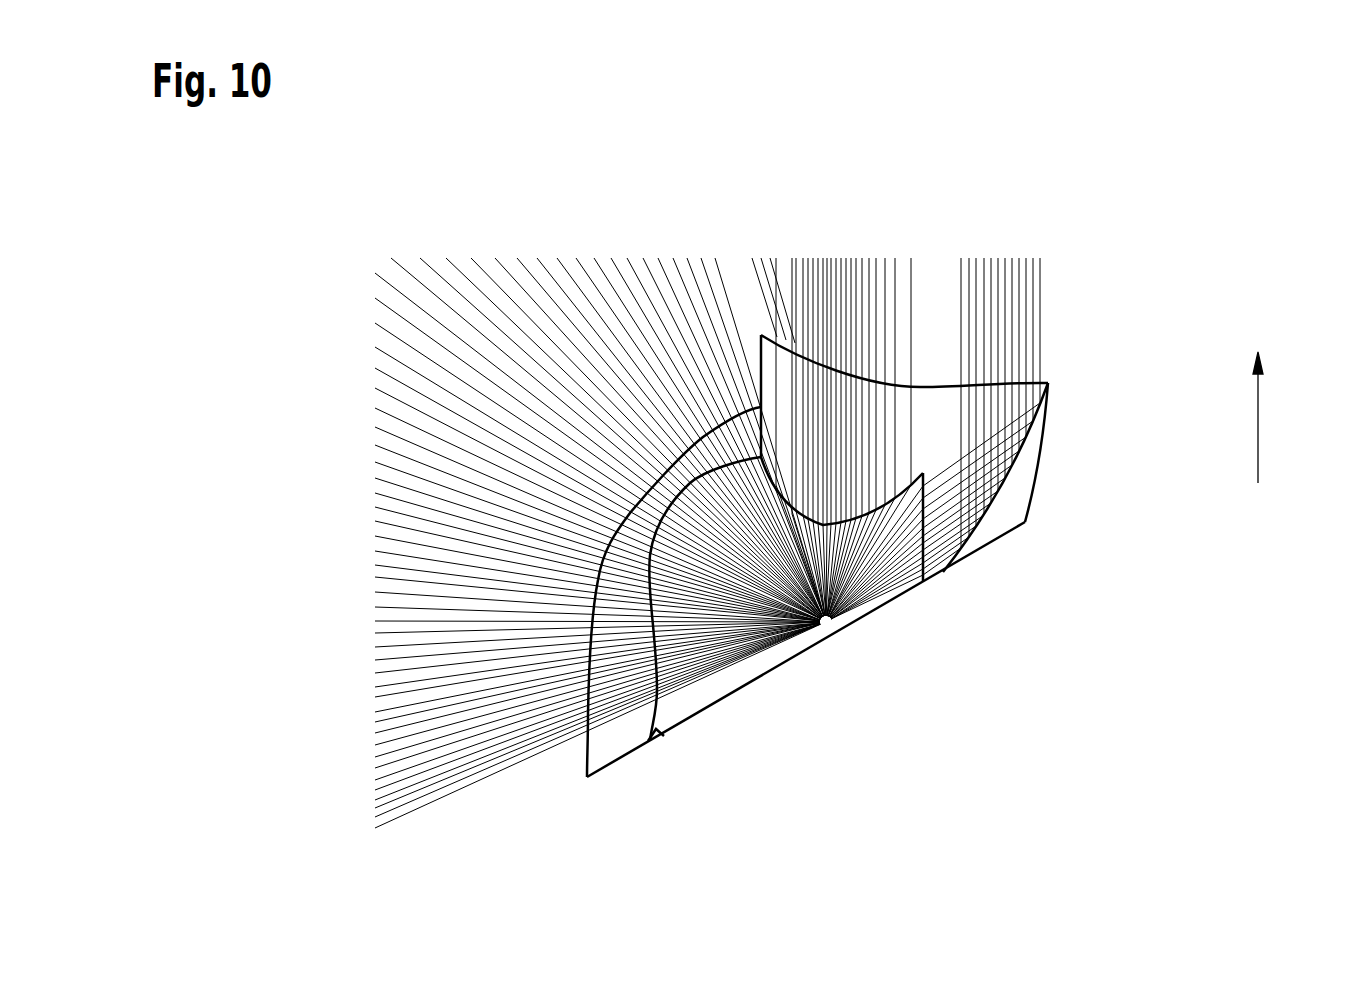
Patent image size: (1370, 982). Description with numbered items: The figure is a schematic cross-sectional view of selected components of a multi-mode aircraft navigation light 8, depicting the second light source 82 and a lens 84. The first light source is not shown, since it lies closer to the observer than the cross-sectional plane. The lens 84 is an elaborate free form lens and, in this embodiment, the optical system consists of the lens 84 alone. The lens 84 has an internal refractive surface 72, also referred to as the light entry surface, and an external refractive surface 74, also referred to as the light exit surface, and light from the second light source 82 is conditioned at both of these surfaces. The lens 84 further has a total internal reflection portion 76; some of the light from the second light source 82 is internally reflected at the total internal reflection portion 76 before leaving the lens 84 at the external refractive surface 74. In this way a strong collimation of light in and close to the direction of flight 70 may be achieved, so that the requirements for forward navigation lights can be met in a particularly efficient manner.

The multi-mode aircraft navigation light 8 is at (349, 251).
The direction of flight 70 is at (1258, 427).
The internal refractive surface 72 is at (657, 733).
The external refractive surface 74 is at (578, 753).
The total internal reflection portion 76 is at (1030, 432).
The second light source 82 is at (826, 630).
The lens 84 is at (622, 740).